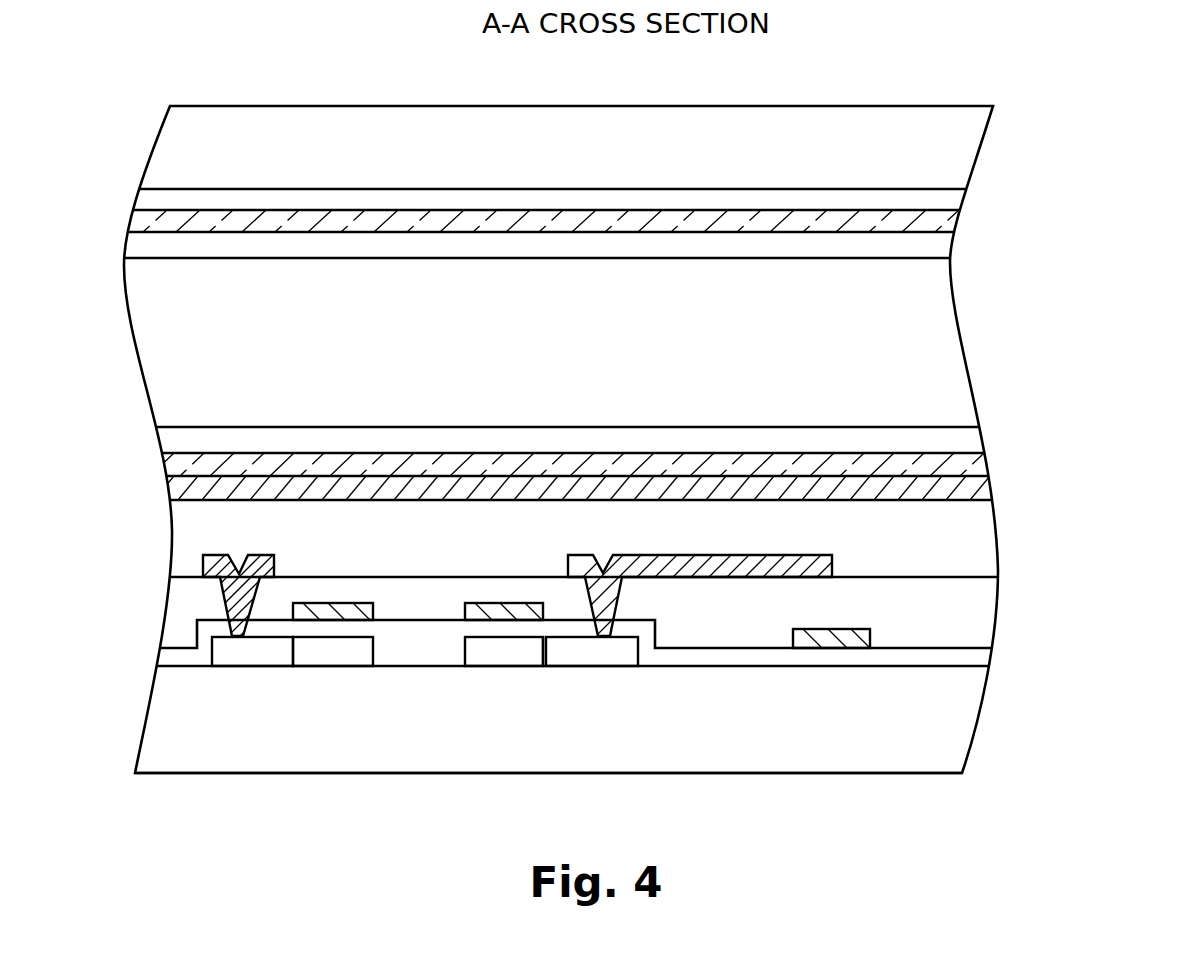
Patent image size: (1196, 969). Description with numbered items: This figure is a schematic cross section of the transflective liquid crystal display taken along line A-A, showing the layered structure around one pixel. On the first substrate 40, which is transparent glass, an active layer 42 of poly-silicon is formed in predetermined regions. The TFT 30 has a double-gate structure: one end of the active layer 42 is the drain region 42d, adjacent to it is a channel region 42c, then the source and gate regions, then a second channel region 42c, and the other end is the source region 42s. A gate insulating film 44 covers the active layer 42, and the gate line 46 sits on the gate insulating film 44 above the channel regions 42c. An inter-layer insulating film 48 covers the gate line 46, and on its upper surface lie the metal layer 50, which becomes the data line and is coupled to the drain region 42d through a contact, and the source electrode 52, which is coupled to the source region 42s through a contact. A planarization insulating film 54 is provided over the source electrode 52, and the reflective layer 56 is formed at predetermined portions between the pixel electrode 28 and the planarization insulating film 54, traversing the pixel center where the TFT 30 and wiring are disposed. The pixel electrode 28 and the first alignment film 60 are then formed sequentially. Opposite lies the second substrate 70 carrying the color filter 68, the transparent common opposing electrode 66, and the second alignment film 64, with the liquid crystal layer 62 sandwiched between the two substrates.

The second substrate 70 is at (952, 151).
The color filter 68 is at (948, 198).
The opposing electrode 66 is at (943, 225).
The second alignment film 64 is at (944, 243).
The liquid crystal layer 62 is at (932, 344).
The first alignment film 60 is at (977, 438).
The pixel electrode 28 is at (982, 465).
The reflective layer 56 is at (982, 492).
The planarization insulating film 54 is at (957, 544).
The inter-layer insulating film 48 is at (977, 614).
The gate insulating film 44 is at (975, 658).
The first substrate 40 is at (960, 720).
The TFT 30 is at (427, 546).
The metal layer 50 is at (250, 558).
The source electrode 52 is at (728, 558).
The gate line 46 is at (330, 607).
The active layer 42 is at (560, 645).
The drain region 42d is at (265, 655).
The channel region 42c is at (345, 655).
The source region 42s is at (625, 655).